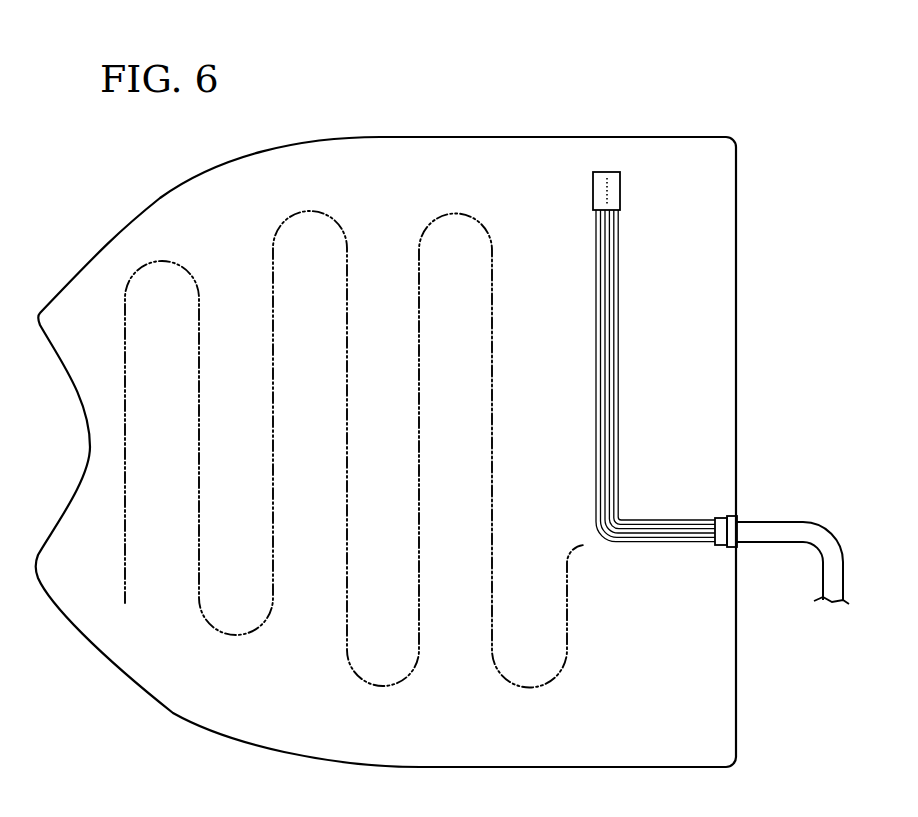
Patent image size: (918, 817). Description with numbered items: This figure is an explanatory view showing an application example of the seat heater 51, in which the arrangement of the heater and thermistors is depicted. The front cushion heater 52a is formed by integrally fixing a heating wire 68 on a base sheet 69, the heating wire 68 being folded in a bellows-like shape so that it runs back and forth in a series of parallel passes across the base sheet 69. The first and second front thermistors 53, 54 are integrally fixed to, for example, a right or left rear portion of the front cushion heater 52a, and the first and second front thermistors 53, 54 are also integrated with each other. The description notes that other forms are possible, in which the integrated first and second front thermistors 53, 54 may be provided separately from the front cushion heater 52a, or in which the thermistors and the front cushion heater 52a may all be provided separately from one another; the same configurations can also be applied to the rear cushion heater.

The seat heater 51 is at (386, 389).
The front cushion heater 52a is at (386, 389).
The base sheet 69 is at (440, 157).
The heating wire 68 is at (458, 211).
The first front thermistor 53 is at (594, 184).
The second front thermistor 54 is at (620, 185).